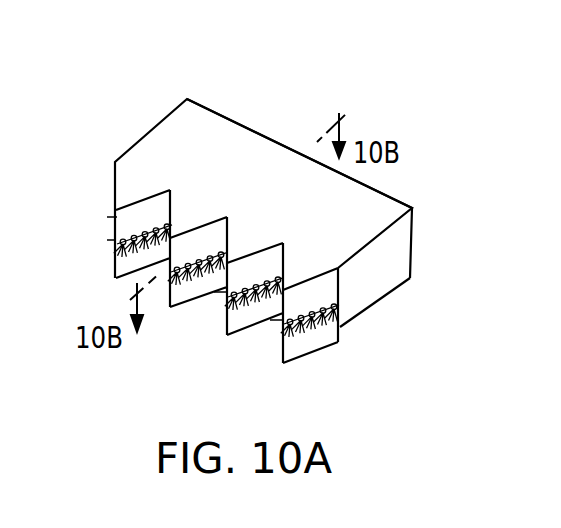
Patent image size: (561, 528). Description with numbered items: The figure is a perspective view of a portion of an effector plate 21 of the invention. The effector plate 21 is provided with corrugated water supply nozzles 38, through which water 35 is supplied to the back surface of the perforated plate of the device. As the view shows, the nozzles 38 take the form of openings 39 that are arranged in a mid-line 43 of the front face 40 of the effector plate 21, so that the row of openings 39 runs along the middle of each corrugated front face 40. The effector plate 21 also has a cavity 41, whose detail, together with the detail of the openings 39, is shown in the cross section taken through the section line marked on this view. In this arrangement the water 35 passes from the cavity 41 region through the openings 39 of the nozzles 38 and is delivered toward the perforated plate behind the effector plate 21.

The effector plate 21 is at (227, 205).
The cavity 41 is at (187, 130).
The corrugated water supply nozzles 38 is at (153, 222).
The openings 39 is at (119, 235).
The front face 40 is at (260, 262).
The water 35 is at (227, 291).
The mid-line 43 is at (342, 326).